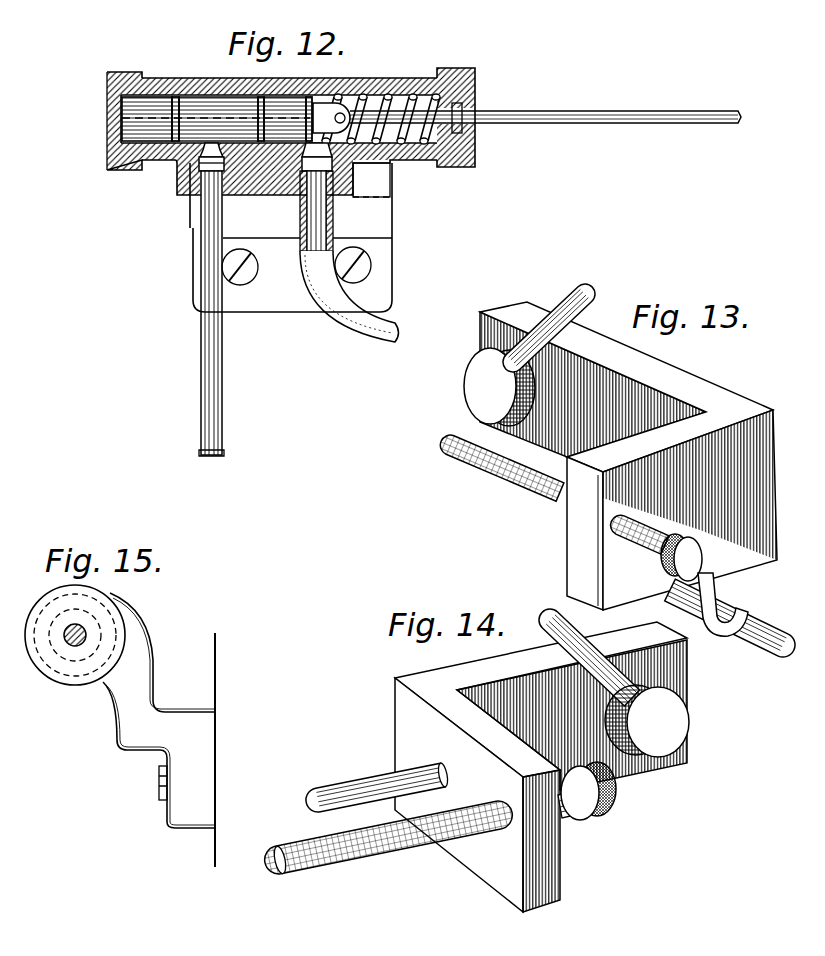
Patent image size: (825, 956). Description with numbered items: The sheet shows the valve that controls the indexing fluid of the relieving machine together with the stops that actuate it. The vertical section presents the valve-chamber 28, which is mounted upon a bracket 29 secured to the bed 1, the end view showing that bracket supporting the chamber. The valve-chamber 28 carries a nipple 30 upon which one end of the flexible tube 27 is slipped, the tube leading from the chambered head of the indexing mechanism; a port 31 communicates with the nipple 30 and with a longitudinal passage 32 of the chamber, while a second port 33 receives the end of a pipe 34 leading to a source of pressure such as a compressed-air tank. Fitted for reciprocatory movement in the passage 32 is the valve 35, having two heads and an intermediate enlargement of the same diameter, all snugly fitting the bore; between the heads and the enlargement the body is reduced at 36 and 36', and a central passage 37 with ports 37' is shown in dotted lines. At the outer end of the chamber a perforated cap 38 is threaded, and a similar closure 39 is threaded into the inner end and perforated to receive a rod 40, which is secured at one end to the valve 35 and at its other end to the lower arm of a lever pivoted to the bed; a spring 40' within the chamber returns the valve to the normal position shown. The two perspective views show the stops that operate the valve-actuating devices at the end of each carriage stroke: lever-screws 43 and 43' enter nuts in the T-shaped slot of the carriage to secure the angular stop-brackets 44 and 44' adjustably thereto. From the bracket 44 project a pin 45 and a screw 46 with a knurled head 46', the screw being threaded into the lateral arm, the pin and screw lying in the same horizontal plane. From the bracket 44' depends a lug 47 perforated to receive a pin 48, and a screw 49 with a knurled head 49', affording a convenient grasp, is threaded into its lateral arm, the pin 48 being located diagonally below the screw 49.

In FIG. 15, the framework or sustaining-bed 1 is at (216, 826).
In FIG. 12, the flexible tube 27 is at (397, 333).
In FIG. 12, the valve-chamber 28 is at (420, 161).
In FIG. 15, the valve-chamber 28 is at (100, 604).
In FIG. 12, the bracket 29 is at (291, 237).
In FIG. 15, the bracket 29 is at (159, 710).
In FIG. 12, the nipple 30 is at (326, 215).
In FIG. 12, the port 31 is at (300, 211).
In FIG. 12, the longitudinal passage 32 is at (418, 96).
In FIG. 12, the port 33 is at (206, 190).
In FIG. 12, the pipe 34 is at (202, 280).
In FIG. 12, the valve 35 is at (192, 105).
In FIG. 12, the reduced portion of valve body 36 is at (173, 100).
In FIG. 12, the reduced portion of valve body 36' is at (381, 91).
In FIG. 12, the central passage 37 is at (218, 90).
In FIG. 12, the port 37' is at (281, 188).
In FIG. 12, the perforated cap 38 is at (122, 79).
In FIG. 12, the closure 39 is at (476, 74).
In FIG. 12, the rod 40 is at (545, 104).
In FIG. 15, the rod 40 is at (55, 675).
In FIG. 12, the spring 40' is at (369, 85).
In FIG. 14, the lever-screw 43 is at (614, 683).
In FIG. 13, the lever-screw 43' is at (502, 355).
In FIG. 14, the stop-bracket 44 is at (541, 767).
In FIG. 13, the stop-bracket 44' is at (628, 456).
In FIG. 14, the pin 45 is at (348, 789).
In FIG. 14, the screw 46 is at (389, 851).
In FIG. 14, the knurled head 46' is at (622, 791).
In FIG. 13, the lug 47 is at (741, 590).
In FIG. 13, the pin 48 is at (762, 640).
In FIG. 13, the screw 49 is at (502, 476).
In FIG. 13, the knurled head 49' is at (653, 556).